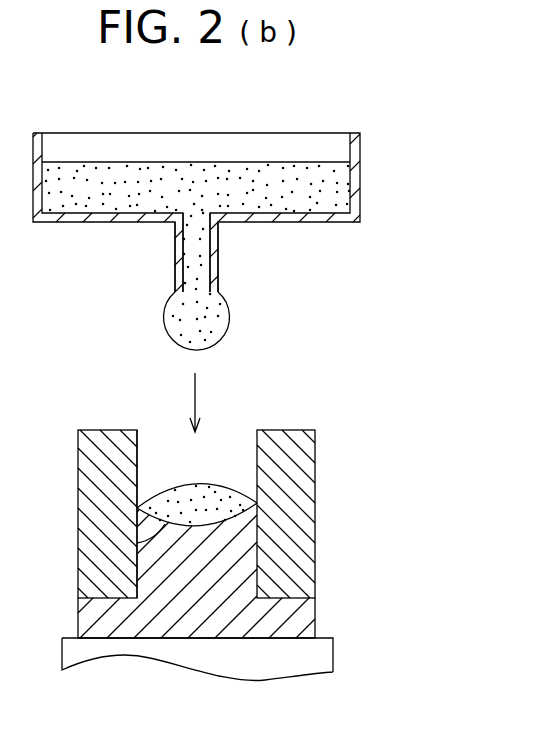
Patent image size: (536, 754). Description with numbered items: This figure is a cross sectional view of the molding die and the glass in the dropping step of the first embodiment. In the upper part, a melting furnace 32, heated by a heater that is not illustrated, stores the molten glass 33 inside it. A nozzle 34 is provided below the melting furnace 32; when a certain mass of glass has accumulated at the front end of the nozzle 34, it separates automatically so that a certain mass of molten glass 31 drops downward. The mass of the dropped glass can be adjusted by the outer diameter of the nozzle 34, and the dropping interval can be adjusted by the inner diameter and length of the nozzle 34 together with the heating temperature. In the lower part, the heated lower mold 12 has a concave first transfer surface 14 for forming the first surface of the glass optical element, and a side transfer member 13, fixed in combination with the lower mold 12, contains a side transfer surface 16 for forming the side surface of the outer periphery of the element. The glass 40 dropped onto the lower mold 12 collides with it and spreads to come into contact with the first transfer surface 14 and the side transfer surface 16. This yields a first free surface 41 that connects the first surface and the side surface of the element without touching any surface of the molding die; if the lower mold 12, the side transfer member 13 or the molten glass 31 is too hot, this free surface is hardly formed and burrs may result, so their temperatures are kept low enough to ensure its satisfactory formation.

The lower mold 12 is at (305, 617).
The side transfer member 13 is at (300, 488).
The first transfer surface 14 is at (137, 545).
The side transfer surface 16 is at (138, 512).
The molten glass 31 is at (210, 318).
The melting furnace 32 is at (355, 195).
The molten glass 33 is at (318, 183).
The nozzle 34 is at (220, 258).
The glass 40 is at (225, 483).
The first free surface 41 is at (255, 512).